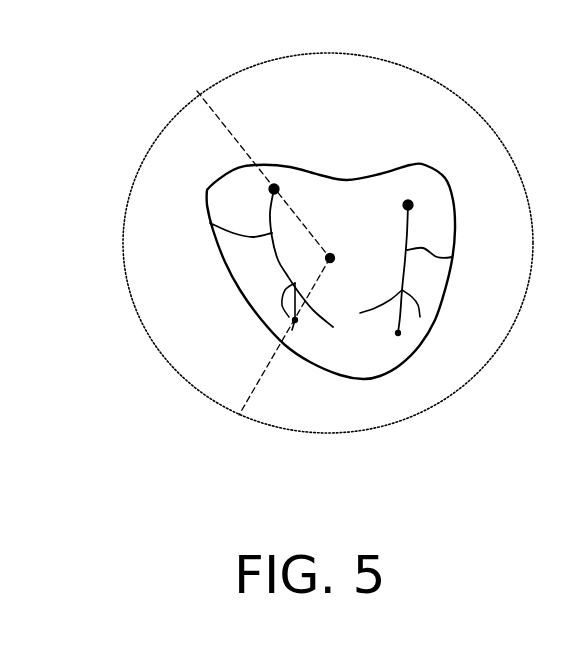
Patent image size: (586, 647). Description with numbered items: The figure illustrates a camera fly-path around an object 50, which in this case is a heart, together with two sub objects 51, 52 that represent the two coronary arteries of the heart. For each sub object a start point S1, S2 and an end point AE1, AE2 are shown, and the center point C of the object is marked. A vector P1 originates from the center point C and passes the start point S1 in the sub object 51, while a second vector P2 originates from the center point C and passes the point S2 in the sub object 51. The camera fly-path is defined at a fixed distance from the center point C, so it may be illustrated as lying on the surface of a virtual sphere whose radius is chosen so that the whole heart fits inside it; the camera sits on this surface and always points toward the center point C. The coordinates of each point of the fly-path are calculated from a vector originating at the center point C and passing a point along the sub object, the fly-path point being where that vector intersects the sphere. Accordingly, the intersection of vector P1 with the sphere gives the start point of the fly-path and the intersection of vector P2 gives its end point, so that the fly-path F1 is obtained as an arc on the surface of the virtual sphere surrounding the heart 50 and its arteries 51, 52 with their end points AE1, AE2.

The fly-path F1 is at (123, 223).
The vector P1 is at (194, 85).
The vector P2 is at (238, 422).
The start point S1 is at (274, 189).
The start point S2 is at (408, 205).
The center point C is at (330, 258).
The object 50 is at (223, 258).
The sub object 51 is at (452, 257).
The sub object 52 is at (210, 223).
The end point AE1 is at (295, 320).
The end point AE2 is at (398, 333).